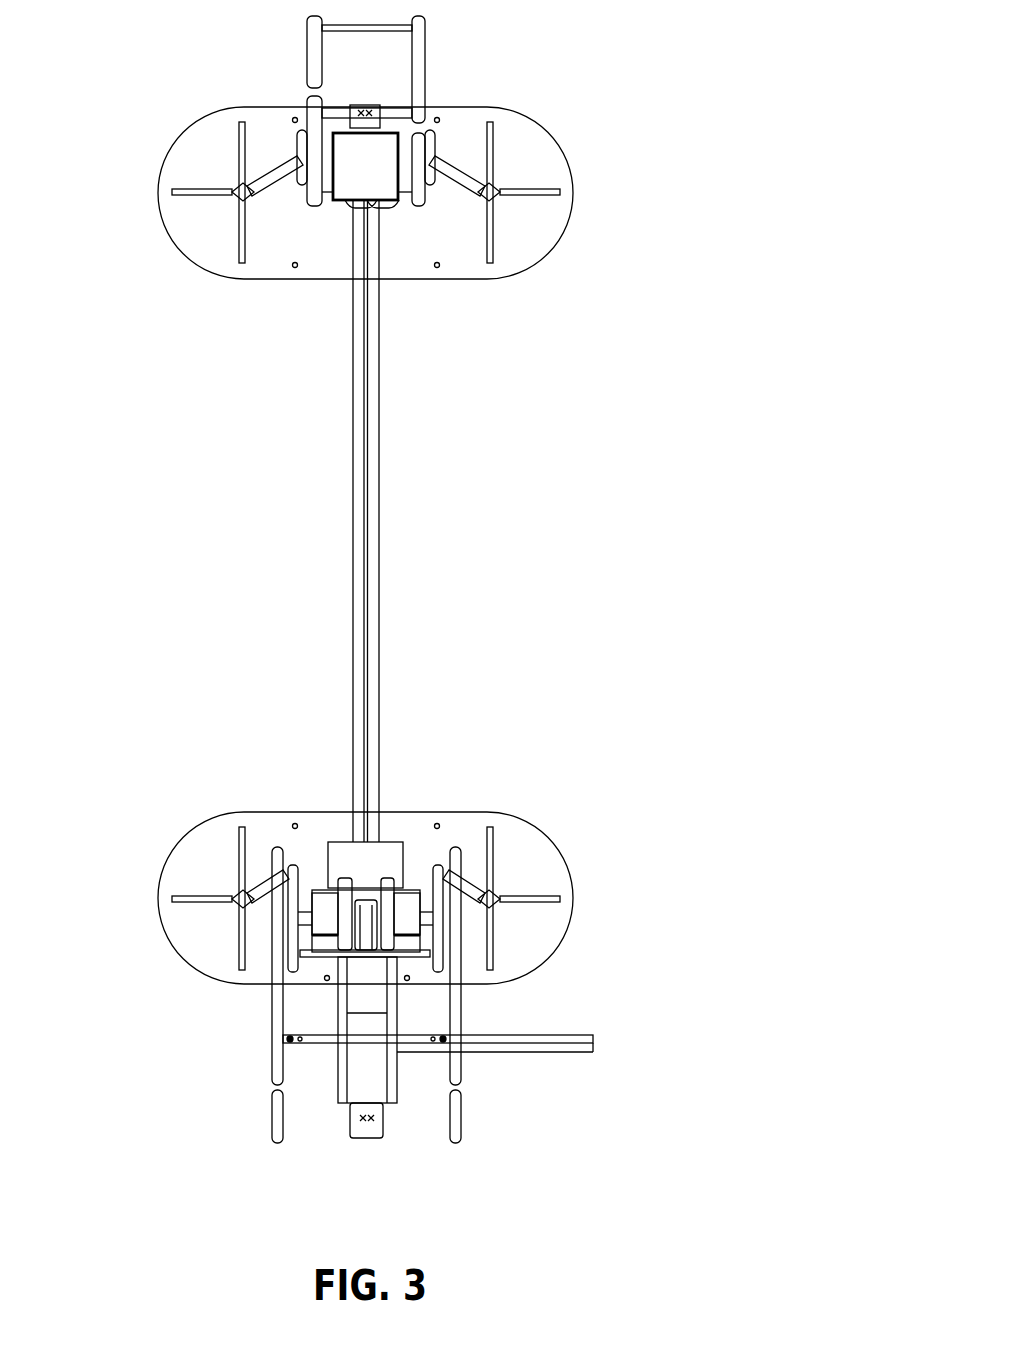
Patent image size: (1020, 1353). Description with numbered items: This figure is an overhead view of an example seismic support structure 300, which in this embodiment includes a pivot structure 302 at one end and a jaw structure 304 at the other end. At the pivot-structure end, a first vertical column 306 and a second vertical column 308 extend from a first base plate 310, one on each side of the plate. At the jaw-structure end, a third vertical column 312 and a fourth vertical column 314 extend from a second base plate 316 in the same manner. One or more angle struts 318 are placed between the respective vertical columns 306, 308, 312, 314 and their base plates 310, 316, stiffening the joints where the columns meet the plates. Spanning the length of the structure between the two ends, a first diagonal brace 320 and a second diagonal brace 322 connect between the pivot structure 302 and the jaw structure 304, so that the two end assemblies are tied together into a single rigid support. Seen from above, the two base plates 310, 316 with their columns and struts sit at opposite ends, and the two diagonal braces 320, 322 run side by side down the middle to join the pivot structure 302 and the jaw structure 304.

The seismic support structure 300 is at (708, 75).
The pivot structure 302 is at (565, 795).
The jaw structure 304 is at (528, 85).
The first vertical column 306 is at (257, 910).
The second vertical column 308 is at (480, 908).
The first base plate 310 is at (192, 853).
The third vertical column 312 is at (257, 177).
The fourth vertical column 314 is at (463, 177).
The second base plate 316 is at (183, 237).
The angle struts 318 is at (217, 213).
The first diagonal brace 320 is at (353, 562).
The second diagonal brace 322 is at (378, 478).